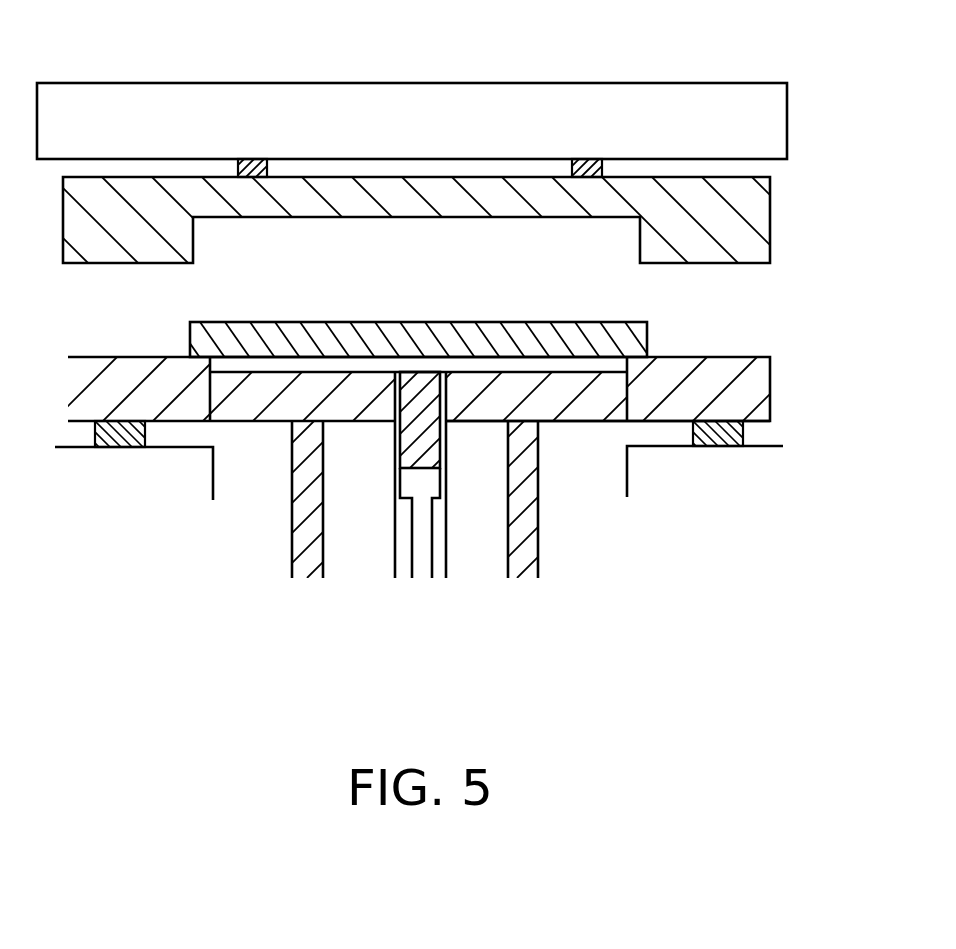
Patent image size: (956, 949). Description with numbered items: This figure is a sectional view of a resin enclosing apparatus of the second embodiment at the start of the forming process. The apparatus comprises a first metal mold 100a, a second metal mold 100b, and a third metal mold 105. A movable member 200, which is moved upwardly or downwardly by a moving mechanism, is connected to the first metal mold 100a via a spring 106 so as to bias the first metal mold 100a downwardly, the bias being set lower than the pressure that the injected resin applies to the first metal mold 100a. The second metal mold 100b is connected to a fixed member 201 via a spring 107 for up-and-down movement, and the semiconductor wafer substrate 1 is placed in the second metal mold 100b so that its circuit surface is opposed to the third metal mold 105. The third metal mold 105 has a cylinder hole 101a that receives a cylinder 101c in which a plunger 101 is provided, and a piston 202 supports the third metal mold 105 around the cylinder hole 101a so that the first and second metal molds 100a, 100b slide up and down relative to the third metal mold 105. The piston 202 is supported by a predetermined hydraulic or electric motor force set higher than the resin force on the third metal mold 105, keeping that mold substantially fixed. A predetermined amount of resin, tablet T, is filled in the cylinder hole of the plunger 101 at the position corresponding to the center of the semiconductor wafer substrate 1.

The movable member 200 is at (788, 130).
The spring 106 is at (602, 177).
The first metal mold 100a is at (770, 233).
The semiconductor wafer substrate 1 is at (427, 322).
The second metal mold 100b is at (773, 387).
The third metal mold 105 is at (572, 423).
The fixed member 201 is at (770, 445).
The spring 107 is at (747, 445).
The piston 202 is at (538, 560).
The cylinder 101c is at (396, 545).
The cylinder hole 101a is at (443, 427).
The plunger 101 is at (434, 497).
The tablet T is at (395, 450).